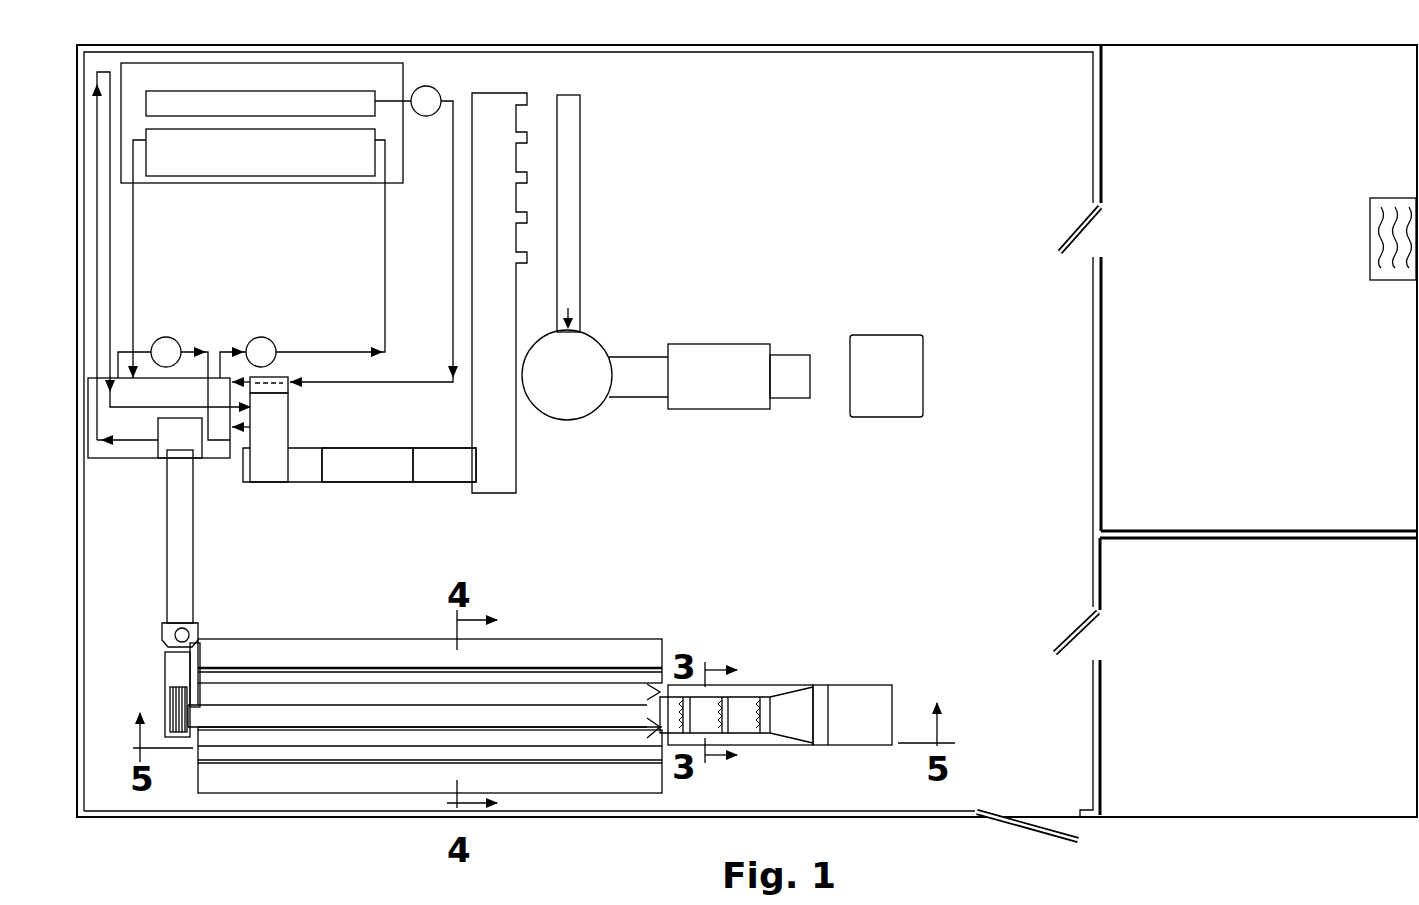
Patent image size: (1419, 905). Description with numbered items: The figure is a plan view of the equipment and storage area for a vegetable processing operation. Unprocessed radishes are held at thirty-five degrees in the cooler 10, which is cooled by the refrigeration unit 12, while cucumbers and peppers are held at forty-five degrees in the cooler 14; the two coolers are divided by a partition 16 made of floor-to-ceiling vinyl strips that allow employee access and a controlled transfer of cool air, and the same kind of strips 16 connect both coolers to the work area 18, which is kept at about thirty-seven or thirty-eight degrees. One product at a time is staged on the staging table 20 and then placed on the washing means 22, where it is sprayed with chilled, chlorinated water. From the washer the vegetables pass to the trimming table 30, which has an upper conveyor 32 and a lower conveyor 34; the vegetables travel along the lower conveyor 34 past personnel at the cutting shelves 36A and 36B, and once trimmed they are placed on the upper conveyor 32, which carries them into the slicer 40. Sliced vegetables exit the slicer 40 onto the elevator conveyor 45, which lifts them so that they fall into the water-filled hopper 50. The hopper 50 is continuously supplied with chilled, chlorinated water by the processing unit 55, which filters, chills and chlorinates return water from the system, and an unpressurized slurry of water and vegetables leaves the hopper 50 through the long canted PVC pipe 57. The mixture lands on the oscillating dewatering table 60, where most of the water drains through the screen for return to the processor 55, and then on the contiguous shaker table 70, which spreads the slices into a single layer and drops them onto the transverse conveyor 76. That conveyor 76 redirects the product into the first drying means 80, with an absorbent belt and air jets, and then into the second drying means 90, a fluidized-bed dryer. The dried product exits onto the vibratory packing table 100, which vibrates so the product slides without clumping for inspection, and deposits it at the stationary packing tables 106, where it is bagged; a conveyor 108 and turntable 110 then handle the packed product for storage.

The cooler 10 is at (1202, 276).
The refrigeration unit 12 is at (1383, 280).
The cooler 14 is at (1267, 751).
The partition 16 is at (1095, 193).
The work area 18 is at (803, 569).
The staging table 20 is at (860, 690).
The washing means 22 is at (752, 683).
The trimming table 30 is at (444, 729).
The upper conveyor 32 is at (407, 715).
The lower conveyor 34 is at (305, 693).
The cutting shelf 36A is at (635, 643).
The cutting shelf 36B is at (602, 778).
The slicer 40 is at (167, 672).
The elevator conveyor 45 is at (167, 572).
The hopper 50 is at (168, 442).
The processing unit 55 is at (300, 183).
The PVC pipe 57 is at (97, 272).
The dewatering table 60 is at (277, 405).
The shaker table 70 is at (277, 437).
The conveyor 76 is at (305, 482).
The first means for drying 80 is at (373, 482).
The second drying means 90 is at (440, 482).
The vibratory packing table 100 is at (558, 279).
The stationary packing tables 106 is at (527, 97).
The conveyor 108 is at (580, 280).
The turntable 110 is at (593, 342).